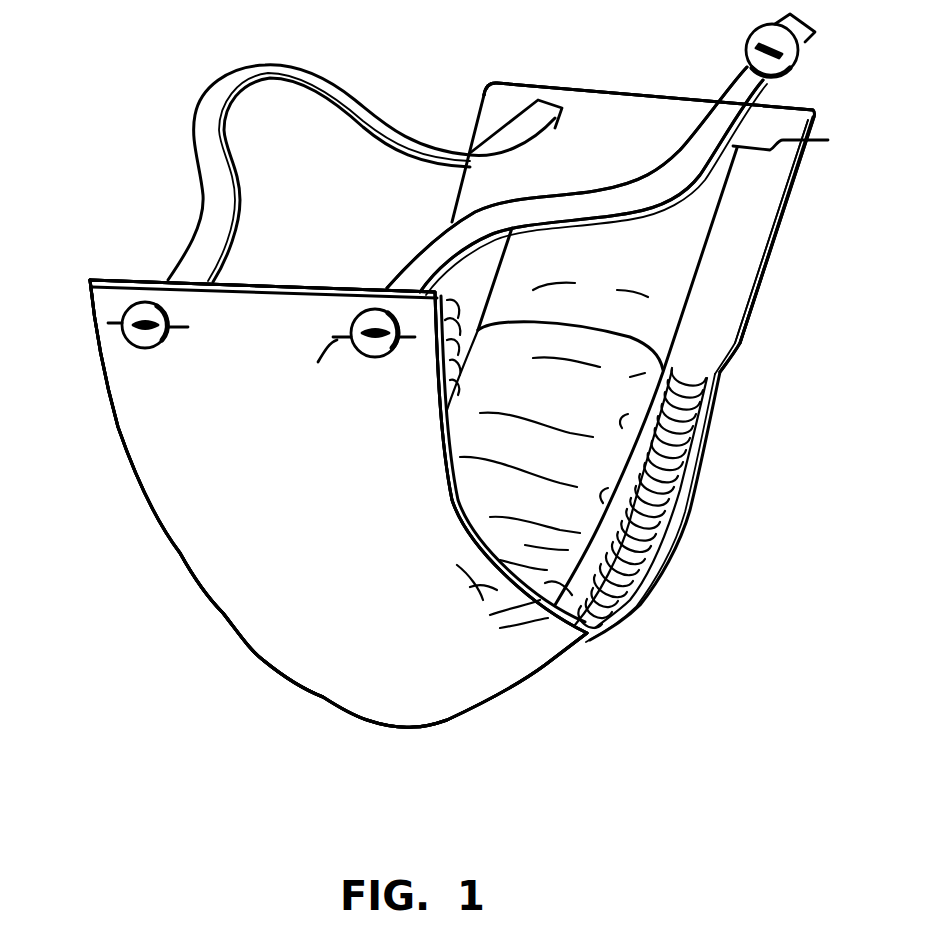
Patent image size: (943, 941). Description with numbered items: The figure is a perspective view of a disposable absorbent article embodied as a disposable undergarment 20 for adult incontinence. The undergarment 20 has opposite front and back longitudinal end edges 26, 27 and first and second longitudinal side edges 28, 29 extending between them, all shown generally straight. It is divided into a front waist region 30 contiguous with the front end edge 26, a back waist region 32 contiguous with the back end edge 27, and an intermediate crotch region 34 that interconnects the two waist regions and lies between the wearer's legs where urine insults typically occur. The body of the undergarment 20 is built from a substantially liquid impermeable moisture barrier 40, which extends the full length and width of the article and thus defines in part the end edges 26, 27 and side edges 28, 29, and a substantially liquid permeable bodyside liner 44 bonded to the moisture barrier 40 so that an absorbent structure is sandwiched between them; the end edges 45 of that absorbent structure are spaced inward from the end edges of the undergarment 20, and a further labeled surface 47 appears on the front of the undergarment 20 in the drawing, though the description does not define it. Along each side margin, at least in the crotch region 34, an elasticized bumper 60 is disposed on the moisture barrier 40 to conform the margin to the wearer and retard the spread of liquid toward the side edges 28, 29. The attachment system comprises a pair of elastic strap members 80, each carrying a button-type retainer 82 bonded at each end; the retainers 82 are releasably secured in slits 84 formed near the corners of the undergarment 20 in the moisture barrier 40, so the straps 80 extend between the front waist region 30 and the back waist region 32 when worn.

The disposable undergarment 20 is at (98, 385).
The front longitudinal end edge 26 is at (265, 280).
The back longitudinal end edge 27 is at (614, 92).
The first longitudinal side edge 28 is at (760, 297).
The second longitudinal side edge 29 is at (455, 195).
The front waist region 30 is at (158, 447).
The back waist region 32 is at (800, 220).
The crotch region 34 is at (692, 540).
The moisture barrier 40 is at (372, 594).
The bodyside liner 44 is at (627, 161).
The end edges of absorbent structure 45 is at (263, 660).
The front panel surface 47 is at (346, 481).
The elasticized bumper 60 is at (712, 440).
The strap member 80 is at (193, 148).
The retainer 82 is at (143, 300).
The slit 84 is at (503, 118).